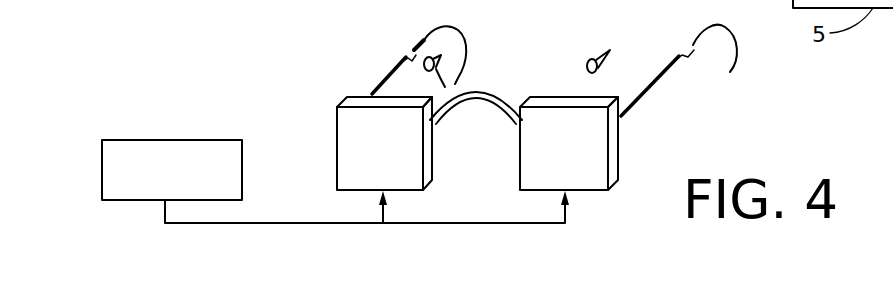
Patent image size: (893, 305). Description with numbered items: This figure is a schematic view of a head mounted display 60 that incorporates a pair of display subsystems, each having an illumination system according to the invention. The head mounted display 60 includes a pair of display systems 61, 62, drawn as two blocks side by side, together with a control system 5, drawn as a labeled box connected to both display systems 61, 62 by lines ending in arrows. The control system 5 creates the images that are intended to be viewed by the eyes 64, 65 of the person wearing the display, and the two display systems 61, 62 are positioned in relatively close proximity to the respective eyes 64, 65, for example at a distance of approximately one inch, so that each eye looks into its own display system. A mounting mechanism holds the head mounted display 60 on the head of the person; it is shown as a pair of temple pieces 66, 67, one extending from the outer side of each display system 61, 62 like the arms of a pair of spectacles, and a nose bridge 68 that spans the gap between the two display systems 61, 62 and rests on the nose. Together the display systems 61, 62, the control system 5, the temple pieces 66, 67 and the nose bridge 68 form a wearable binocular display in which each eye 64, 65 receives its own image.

The control system 5 is at (143, 200).
The head mounted display 60 is at (198, 102).
The display system 61 is at (338, 103).
The display system 62 is at (653, 128).
The eye 64 is at (455, 84).
The eye 65 is at (647, 58).
The temple piece 66 is at (393, 66).
The temple piece 67 is at (681, 64).
The nose bridge 68 is at (477, 100).